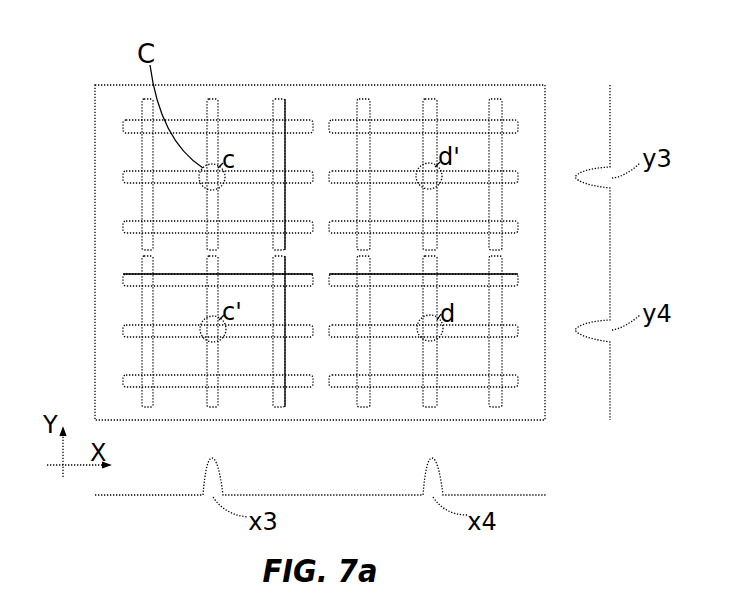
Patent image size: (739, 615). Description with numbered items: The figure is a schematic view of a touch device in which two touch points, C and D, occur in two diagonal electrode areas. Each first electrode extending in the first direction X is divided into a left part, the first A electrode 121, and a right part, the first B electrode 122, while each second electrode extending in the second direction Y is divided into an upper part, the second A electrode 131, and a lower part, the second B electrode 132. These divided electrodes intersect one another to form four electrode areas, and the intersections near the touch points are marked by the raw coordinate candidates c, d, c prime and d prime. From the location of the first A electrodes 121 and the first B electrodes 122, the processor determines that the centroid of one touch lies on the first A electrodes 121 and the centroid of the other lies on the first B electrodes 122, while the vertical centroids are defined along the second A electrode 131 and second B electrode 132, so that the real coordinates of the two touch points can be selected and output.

The first A electrode 121 is at (278, 106).
The first B electrode 122 is at (375, 127).
The second A electrode 131 is at (360, 103).
The second B electrode 132 is at (363, 397).